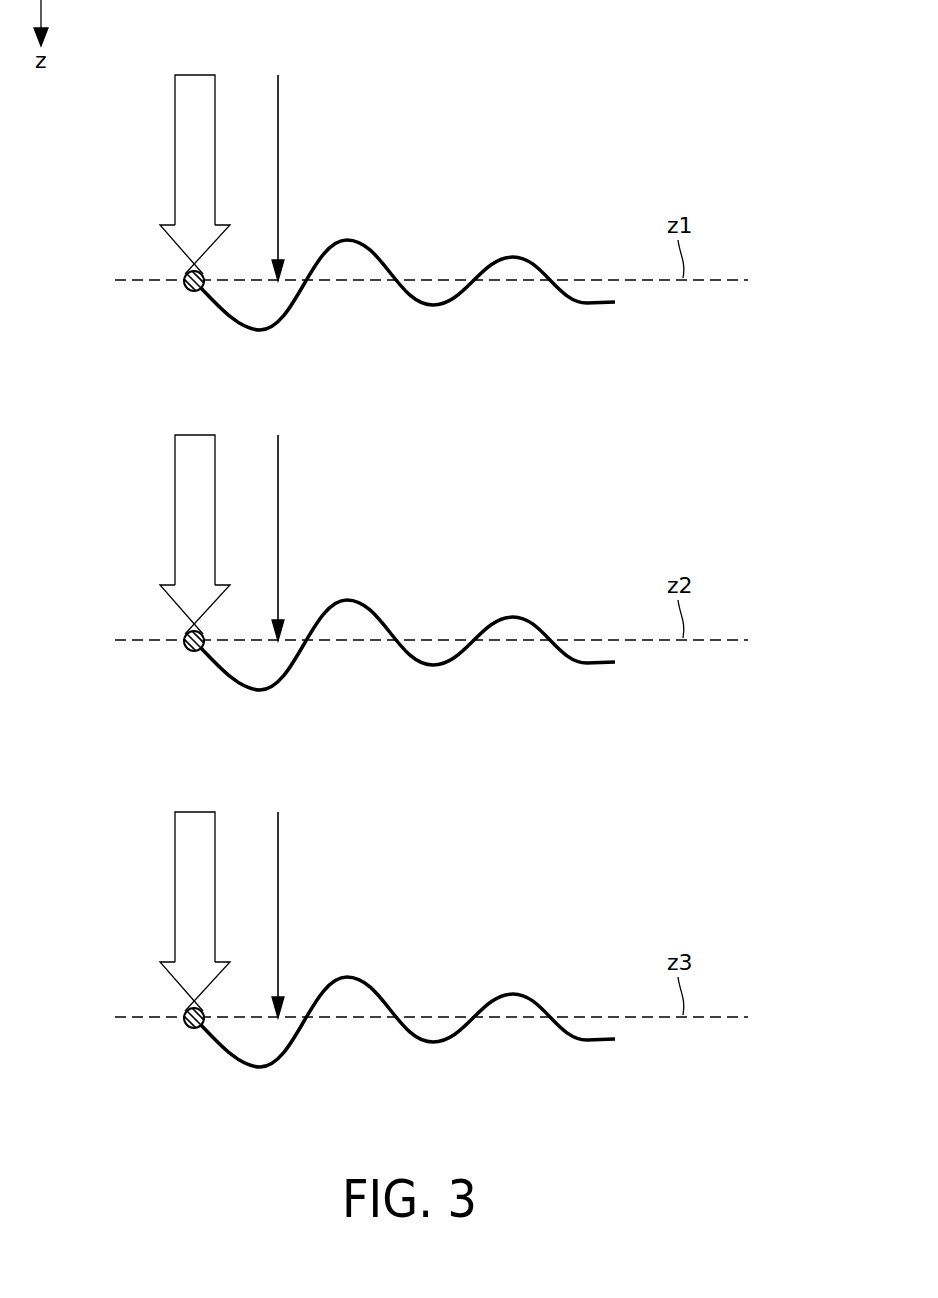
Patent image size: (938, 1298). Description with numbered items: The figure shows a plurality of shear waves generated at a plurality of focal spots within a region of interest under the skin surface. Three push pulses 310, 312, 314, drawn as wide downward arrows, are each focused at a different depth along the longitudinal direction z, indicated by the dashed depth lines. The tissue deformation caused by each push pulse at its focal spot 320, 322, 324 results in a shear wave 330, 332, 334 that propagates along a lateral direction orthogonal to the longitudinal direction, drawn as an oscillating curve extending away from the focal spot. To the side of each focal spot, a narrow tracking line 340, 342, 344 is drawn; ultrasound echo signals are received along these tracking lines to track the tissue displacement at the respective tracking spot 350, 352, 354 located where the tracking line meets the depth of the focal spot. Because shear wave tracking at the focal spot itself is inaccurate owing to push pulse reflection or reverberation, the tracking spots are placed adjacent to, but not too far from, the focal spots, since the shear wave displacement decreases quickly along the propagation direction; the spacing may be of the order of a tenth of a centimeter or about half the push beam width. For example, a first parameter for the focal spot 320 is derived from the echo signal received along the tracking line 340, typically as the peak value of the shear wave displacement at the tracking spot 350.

The push pulse 310 is at (175, 135).
The focal spot 320 is at (187, 290).
The shear wave 330 is at (514, 255).
The tracking line 340 is at (278, 130).
The tracking spot 350 is at (280, 283).
The push pulse 312 is at (176, 534).
The focal spot 322 is at (175, 670).
The shear wave 332 is at (408, 618).
The tracking line 342 is at (301, 538).
The tracking spot 352 is at (431, 676).
The push pulse 314 is at (176, 911).
The focal spot 324 is at (175, 1047).
The shear wave 334 is at (408, 995).
The tracking line 344 is at (301, 915).
The tracking spot 354 is at (431, 1053).